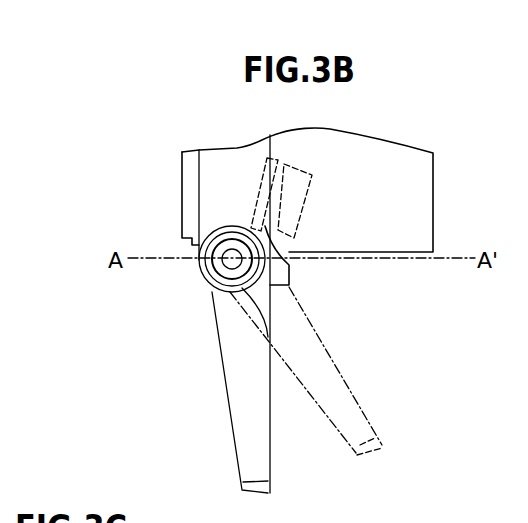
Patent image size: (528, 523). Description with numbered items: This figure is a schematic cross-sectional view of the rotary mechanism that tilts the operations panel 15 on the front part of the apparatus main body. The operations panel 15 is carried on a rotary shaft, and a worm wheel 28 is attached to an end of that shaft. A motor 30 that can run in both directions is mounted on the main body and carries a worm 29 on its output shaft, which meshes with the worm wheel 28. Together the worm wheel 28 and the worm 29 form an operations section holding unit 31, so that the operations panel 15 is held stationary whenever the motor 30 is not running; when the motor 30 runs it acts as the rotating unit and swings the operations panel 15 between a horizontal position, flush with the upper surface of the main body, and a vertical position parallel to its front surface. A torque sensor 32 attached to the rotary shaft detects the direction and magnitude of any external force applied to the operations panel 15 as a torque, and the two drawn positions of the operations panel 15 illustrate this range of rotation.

The operations panel 15 is at (228, 372).
The worm wheel 28 is at (232, 250).
The worm 29 is at (293, 266).
The motor 30 is at (303, 196).
The operations section holding unit 31 is at (310, 242).
The torque sensor 32 is at (211, 233).